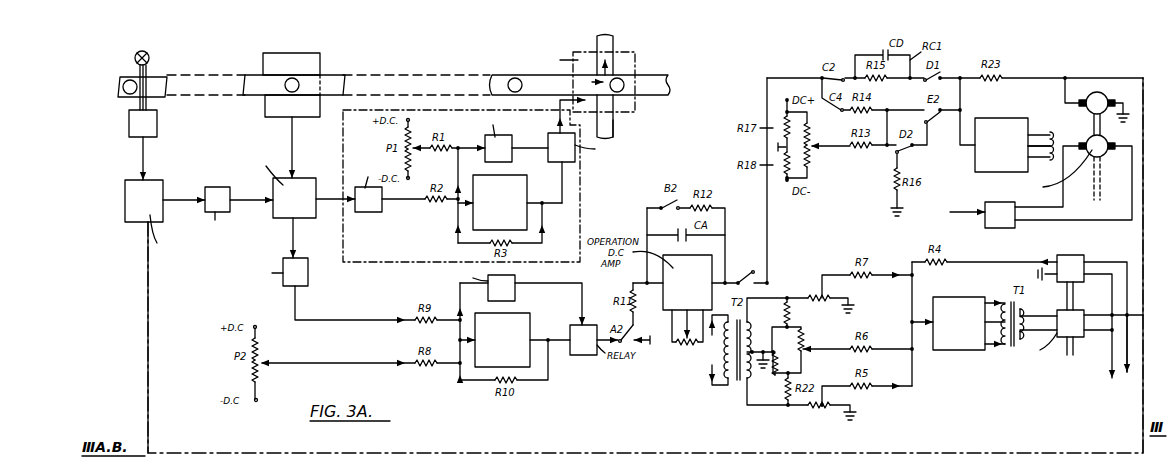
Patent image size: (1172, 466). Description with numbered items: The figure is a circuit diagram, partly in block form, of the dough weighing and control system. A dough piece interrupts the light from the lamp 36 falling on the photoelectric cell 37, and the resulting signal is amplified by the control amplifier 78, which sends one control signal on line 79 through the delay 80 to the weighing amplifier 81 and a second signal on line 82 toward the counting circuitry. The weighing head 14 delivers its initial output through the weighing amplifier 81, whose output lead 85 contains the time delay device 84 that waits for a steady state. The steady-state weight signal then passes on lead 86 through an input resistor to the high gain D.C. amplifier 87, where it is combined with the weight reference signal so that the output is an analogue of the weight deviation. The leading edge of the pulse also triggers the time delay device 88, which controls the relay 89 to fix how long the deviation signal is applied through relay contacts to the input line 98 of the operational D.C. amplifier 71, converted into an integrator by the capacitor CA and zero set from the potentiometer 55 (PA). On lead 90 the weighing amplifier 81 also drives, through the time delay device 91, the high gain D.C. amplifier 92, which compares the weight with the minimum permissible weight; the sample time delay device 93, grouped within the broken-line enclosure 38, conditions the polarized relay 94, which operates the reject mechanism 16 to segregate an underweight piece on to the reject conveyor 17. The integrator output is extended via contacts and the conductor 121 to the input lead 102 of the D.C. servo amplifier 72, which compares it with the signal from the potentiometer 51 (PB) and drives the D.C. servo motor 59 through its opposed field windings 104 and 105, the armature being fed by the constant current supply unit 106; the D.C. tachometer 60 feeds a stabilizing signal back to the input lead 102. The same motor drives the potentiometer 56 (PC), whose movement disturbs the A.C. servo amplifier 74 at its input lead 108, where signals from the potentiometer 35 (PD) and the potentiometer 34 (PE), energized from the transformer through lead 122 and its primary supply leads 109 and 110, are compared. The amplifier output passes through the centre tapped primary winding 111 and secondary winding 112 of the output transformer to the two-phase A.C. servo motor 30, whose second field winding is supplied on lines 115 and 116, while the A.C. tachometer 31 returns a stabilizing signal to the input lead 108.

The weighing head 14 is at (311, 117).
The reject mechanism 16 is at (633, 100).
The reject conveyor 17 is at (615, 125).
The A.C. servo motor 30 is at (1083, 310).
The A.C. tachometer 31 is at (1084, 258).
The potentiometer 34 is at (811, 350).
The potentiometer 35 is at (821, 409).
The lamp 36 is at (150, 58).
The photoelectric cell 37 is at (157, 121).
The sample time delay circuit 38 is at (583, 225).
The potentiometer 51 is at (817, 145).
The potentiometer 55 is at (687, 341).
The potentiometer 56 is at (813, 301).
The D.C. servo motor 59 is at (1090, 138).
The D.C. tachometer 60 is at (1108, 98).
The operational D.C. amplifier 71 is at (712, 290).
The D.C. servo amplifier 72 is at (975, 160).
The A.C. servo amplifier 74 is at (970, 352).
The control amplifier 78 is at (165, 180).
The line 79 is at (180, 203).
The delay 80 is at (215, 192).
The weighing amplifier 81 is at (273, 218).
The line 82 is at (150, 262).
The time delay device 84 is at (307, 283).
The output lead 85 is at (296, 238).
The lead 86 is at (372, 316).
The high gain D.C. amplifier 87 is at (530, 323).
The time delay device 88 is at (515, 280).
The relay 89 is at (585, 355).
The lead 90 is at (325, 198).
The time delay device 91 is at (370, 212).
The high gain D.C. amplifier 92 is at (527, 188).
The sample time delay device 93 is at (512, 140).
The polarized relay 94 is at (575, 158).
The input line 98 is at (650, 290).
The input lead 102 is at (958, 132).
The field winding 104 is at (1052, 132).
The field winding 105 is at (1050, 150).
The supply unit 106 is at (997, 228).
The input lead 108 is at (920, 337).
The lead 109 is at (715, 327).
The lead 110 is at (713, 373).
The primary winding 111 is at (1004, 326).
The secondary winding 112 is at (1030, 322).
The line 115 is at (1112, 356).
The line 116 is at (1124, 366).
The conductor from switch A3 121 is at (752, 280).
The lead 122 is at (764, 398).